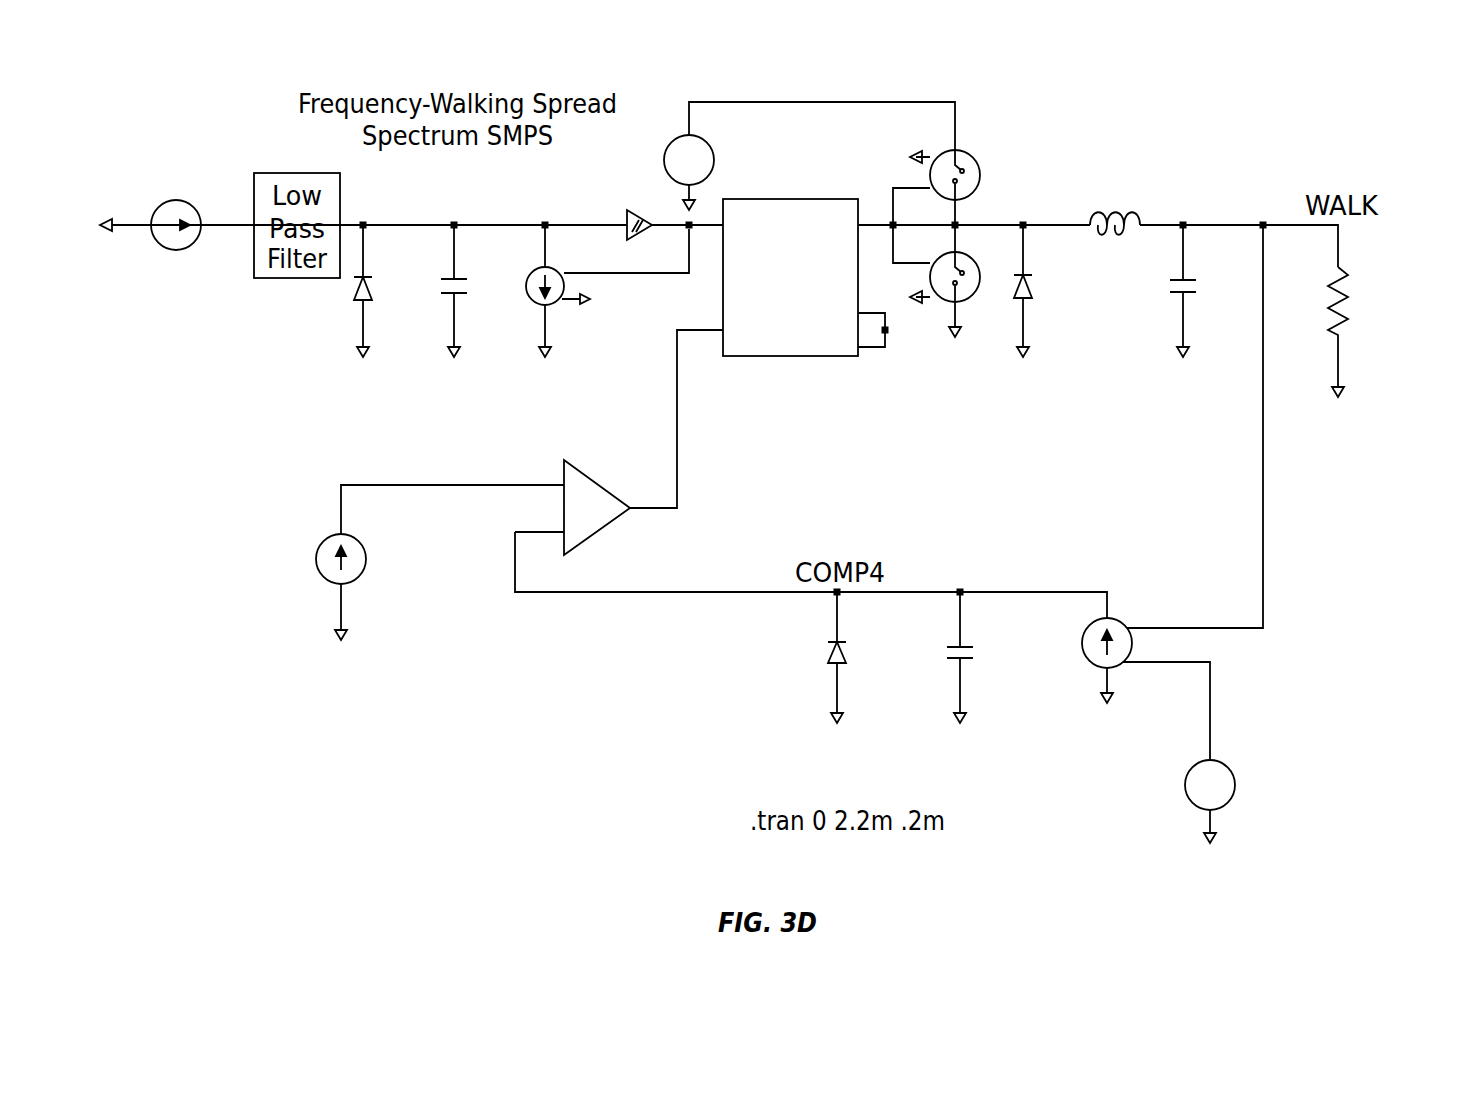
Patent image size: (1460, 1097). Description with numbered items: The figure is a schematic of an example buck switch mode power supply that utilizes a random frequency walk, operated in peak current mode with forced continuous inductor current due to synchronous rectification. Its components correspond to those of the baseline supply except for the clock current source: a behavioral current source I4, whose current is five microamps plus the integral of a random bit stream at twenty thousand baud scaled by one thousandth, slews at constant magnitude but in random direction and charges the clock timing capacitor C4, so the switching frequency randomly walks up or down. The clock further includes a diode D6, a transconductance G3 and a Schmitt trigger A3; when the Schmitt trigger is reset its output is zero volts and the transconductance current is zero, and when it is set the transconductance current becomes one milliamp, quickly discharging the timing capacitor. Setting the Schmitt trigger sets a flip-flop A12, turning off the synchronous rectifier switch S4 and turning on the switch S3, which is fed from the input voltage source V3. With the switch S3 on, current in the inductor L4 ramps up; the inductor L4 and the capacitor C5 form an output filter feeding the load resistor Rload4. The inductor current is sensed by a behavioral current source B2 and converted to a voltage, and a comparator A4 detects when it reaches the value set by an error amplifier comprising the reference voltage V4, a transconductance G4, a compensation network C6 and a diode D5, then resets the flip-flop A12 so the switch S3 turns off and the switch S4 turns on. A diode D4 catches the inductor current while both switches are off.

The behavioral current source I4 is at (175, 275).
The diode D6 is at (383, 291).
The clock timing capacitor C4 is at (470, 291).
The transconductance G3 is at (607, 291).
The Schmitt trigger A3 is at (656, 242).
The voltage source V3 is at (809, 156).
The flip-flop A12 is at (757, 353).
The switch S3 is at (945, 174).
The synchronous rectifier switch S4 is at (945, 281).
The diode D4 is at (1038, 291).
The inductor L4 is at (1115, 228).
The capacitor C5 is at (1206, 291).
The resistor Rload4 is at (1384, 330).
The behavioral current source B2 is at (440, 564).
The comparator A4 is at (811, 527).
The diode D5 is at (856, 657).
The compensation network C6 is at (1014, 657).
The transconductance G4 is at (1146, 669).
The reference voltage V4 is at (1221, 787).